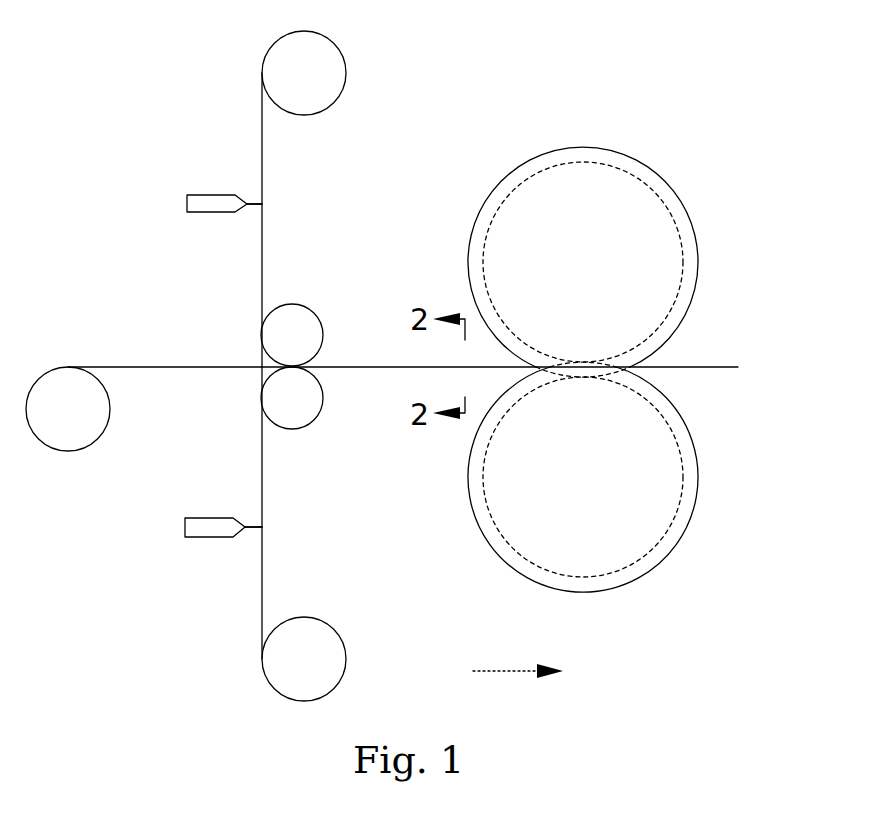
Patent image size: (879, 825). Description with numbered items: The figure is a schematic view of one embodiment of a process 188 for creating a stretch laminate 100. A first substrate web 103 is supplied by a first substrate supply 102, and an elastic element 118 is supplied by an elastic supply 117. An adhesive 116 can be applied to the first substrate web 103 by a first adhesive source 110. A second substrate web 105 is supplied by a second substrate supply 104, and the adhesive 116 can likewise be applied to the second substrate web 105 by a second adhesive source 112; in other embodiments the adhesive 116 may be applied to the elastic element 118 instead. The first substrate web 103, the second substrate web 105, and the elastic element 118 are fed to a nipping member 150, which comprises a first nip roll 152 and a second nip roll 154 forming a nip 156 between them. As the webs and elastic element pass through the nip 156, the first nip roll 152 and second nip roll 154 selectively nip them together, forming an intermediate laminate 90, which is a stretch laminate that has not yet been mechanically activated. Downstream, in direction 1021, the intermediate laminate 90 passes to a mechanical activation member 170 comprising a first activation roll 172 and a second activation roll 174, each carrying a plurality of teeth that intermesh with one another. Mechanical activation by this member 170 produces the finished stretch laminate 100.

The intermediate laminate 90 is at (362, 365).
The stretch laminate 100 is at (714, 366).
The first substrate supply 102 is at (333, 80).
The first substrate web 103 is at (263, 141).
The second substrate supply 104 is at (327, 645).
The second substrate web 105 is at (263, 580).
The first adhesive source 110 is at (187, 199).
The second adhesive source 112 is at (185, 521).
The adhesive 116 is at (254, 200).
The elastic supply 117 is at (58, 428).
The elastic element 118 is at (135, 364).
The nipping member 150 is at (332, 360).
The first nip roll 152 is at (290, 320).
The second nip roll 154 is at (300, 413).
The nip 156 is at (246, 349).
The mechanical activation member 170 is at (618, 233).
The first activation roll 172 is at (698, 264).
The second activation roll 174 is at (698, 468).
The process 188 is at (514, 99).
The direction 1021 is at (522, 670).